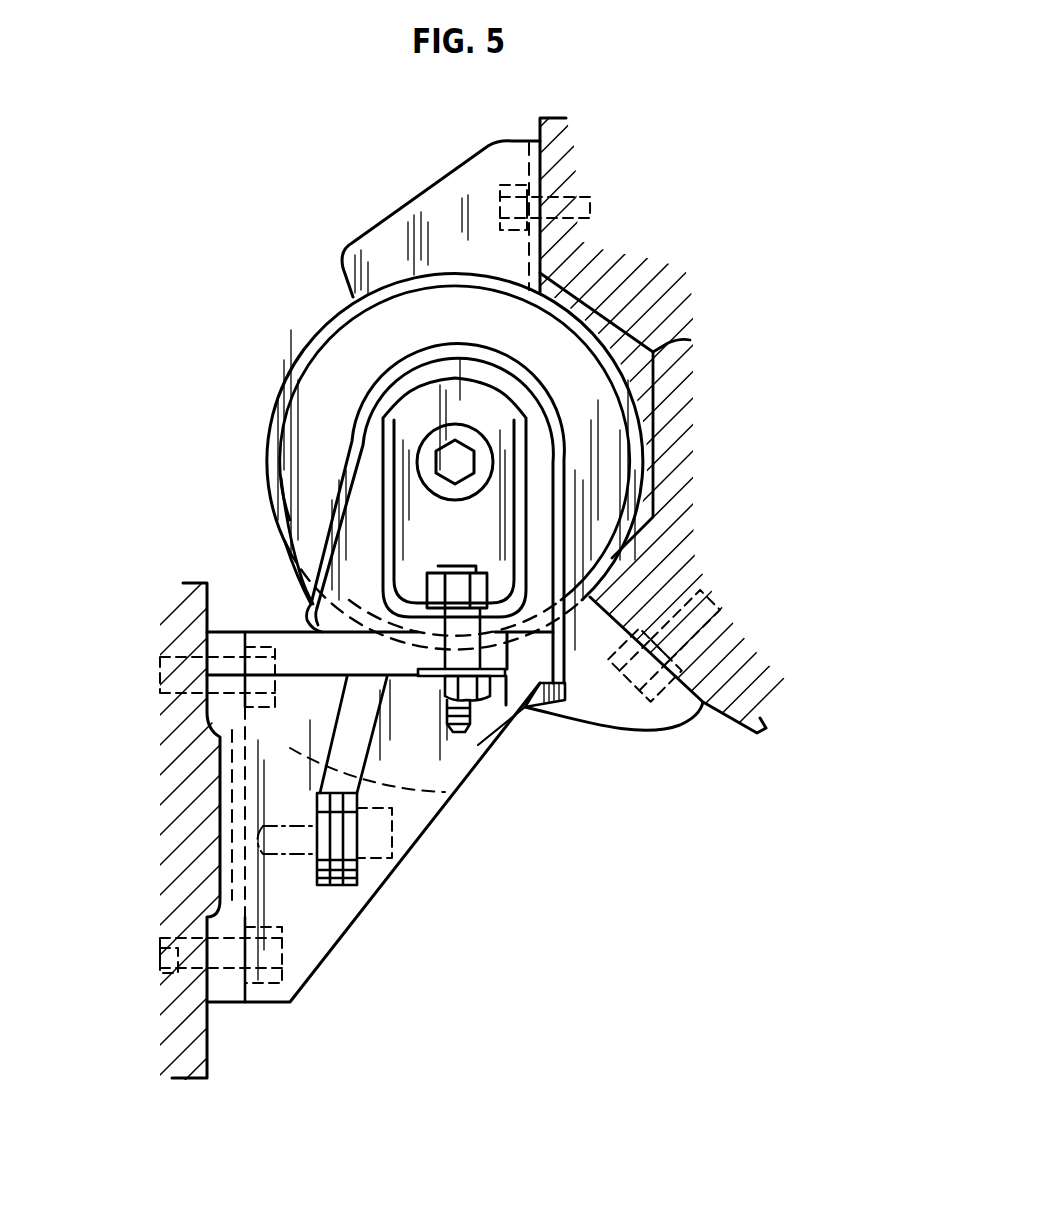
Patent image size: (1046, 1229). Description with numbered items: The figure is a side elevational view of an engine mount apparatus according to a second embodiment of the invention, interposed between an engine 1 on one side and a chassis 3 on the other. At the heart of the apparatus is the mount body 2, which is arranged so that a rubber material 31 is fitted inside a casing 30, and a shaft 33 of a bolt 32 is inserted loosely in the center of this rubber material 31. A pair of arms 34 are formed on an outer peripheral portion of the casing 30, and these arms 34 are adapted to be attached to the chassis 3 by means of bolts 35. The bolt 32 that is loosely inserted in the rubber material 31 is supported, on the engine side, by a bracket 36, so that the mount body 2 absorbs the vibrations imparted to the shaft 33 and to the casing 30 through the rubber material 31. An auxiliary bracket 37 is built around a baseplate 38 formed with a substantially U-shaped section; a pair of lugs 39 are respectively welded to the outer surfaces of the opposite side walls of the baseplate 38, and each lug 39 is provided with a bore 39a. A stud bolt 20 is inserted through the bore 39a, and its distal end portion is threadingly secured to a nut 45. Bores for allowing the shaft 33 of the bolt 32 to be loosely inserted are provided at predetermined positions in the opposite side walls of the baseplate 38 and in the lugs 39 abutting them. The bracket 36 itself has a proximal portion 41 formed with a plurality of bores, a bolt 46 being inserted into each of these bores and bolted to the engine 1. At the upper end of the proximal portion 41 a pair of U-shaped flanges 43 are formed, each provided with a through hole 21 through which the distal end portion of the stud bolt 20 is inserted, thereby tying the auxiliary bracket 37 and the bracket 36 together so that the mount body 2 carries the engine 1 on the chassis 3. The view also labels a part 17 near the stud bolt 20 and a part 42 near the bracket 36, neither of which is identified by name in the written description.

The engine 1 is at (195, 808).
The mount body 2 is at (326, 293).
The chassis 3 is at (570, 143).
The nut 17 is at (487, 590).
The stud bolt 20 is at (462, 738).
The through hole 21 is at (443, 690).
The casing 30 is at (618, 322).
The rubber material 31 is at (310, 380).
The bolt 32 is at (470, 457).
The shaft 33 is at (524, 439).
The arm 34 is at (397, 227).
The bolt 35 is at (497, 200).
The bracket 36 is at (330, 964).
The auxiliary bracket 37 is at (531, 712).
The baseplate 38 is at (340, 550).
The lug 39 is at (533, 520).
The bore 39a is at (440, 590).
The proximal portion 41 is at (219, 868).
The bolt 42 is at (387, 870).
The U-shaped flange 43 is at (306, 672).
The nut 45 is at (493, 733).
The bolt 46 is at (173, 662).